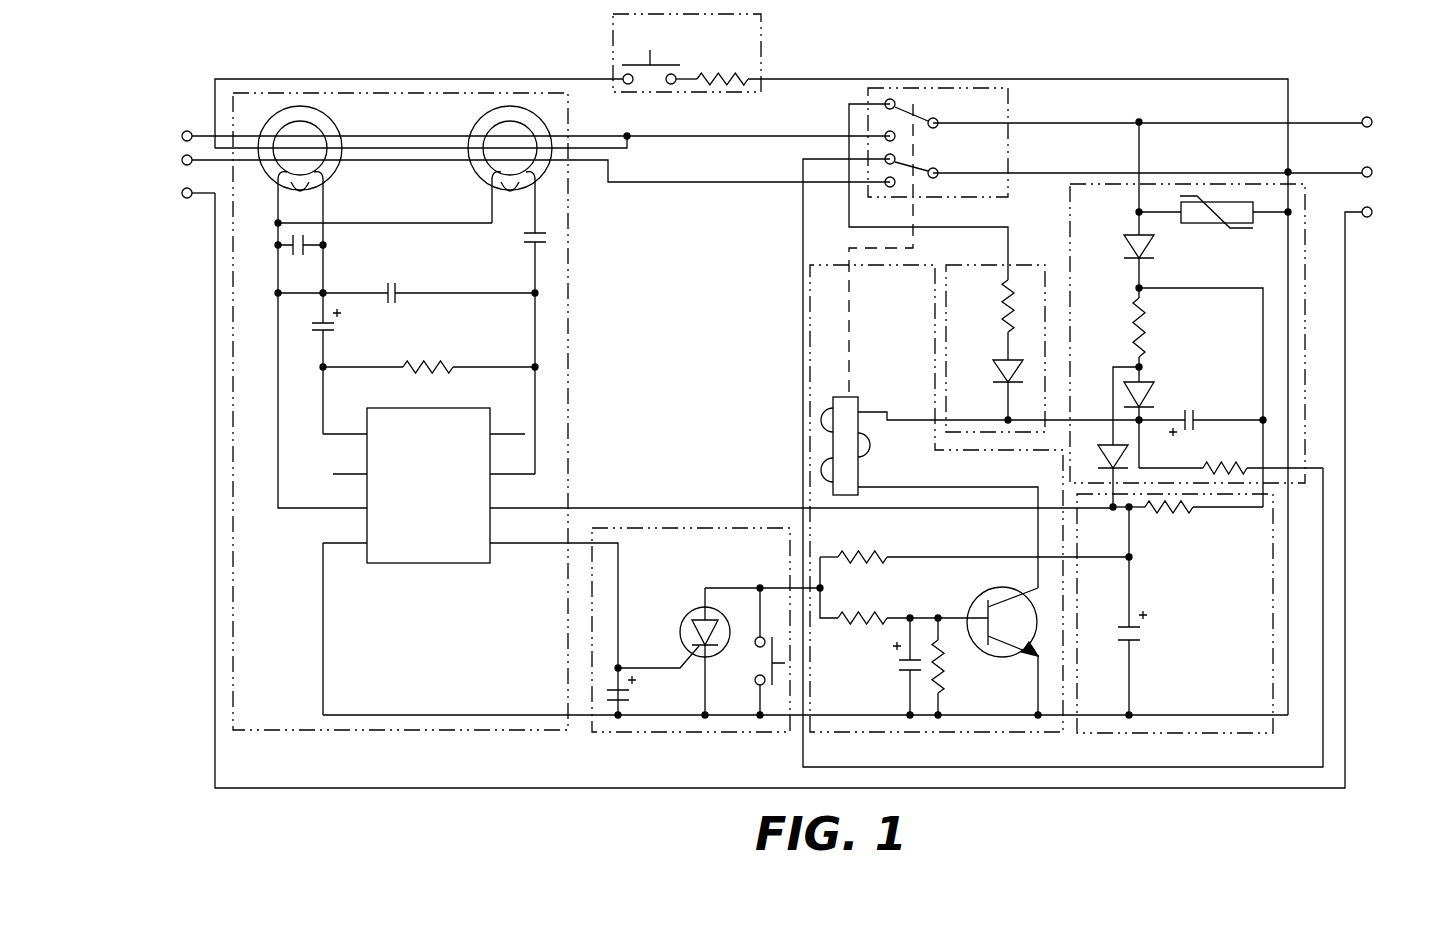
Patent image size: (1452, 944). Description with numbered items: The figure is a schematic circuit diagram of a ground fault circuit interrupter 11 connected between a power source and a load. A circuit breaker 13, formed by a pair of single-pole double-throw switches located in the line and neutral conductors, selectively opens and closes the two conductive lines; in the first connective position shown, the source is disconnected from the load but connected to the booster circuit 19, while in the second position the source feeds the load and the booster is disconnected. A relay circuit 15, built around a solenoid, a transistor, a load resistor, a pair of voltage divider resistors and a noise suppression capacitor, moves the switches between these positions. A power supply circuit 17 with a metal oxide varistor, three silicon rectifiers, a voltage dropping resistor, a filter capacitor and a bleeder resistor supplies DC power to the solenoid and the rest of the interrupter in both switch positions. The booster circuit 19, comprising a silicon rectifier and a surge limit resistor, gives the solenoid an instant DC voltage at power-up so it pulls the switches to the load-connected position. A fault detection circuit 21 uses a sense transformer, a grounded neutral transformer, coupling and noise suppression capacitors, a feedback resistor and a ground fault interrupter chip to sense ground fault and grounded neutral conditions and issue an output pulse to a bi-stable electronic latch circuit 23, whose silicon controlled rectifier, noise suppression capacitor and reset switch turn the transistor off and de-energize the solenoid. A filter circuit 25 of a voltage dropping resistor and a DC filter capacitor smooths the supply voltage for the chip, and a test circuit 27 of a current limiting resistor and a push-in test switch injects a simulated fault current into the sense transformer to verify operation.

The ground fault circuit interrupter 11 is at (320, 808).
The circuit breaker 13 is at (1008, 100).
The relay circuit 15 is at (810, 411).
The power supply circuit 17 is at (1298, 484).
The booster circuit 19 is at (1030, 264).
The fault detection circuit 21 is at (462, 732).
The bi-stable electronic latch circuit 23 is at (632, 732).
The filter circuit 25 is at (1183, 734).
The test circuit 27 is at (761, 50).